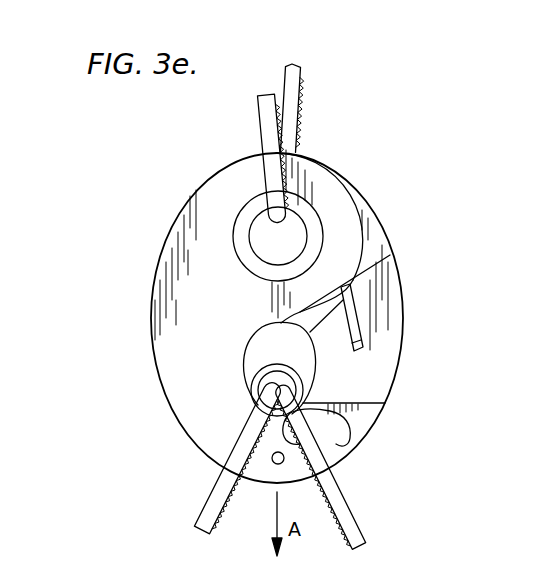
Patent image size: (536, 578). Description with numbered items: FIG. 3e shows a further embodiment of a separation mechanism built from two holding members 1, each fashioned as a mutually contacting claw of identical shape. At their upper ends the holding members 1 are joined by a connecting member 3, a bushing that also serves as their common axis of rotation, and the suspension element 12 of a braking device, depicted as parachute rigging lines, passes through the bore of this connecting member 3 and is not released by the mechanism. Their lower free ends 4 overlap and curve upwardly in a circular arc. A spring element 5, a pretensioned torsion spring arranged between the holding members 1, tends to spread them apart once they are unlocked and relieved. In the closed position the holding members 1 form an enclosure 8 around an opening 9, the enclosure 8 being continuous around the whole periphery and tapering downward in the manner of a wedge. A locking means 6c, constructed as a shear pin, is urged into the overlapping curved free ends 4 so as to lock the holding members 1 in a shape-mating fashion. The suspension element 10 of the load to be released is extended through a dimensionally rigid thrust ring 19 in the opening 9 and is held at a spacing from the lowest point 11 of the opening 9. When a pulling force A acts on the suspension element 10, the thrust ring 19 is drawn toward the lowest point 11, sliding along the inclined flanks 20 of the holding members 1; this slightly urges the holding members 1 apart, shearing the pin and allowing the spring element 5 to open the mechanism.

The holding member 1 is at (210, 187).
The connecting member 3 is at (297, 206).
The free end 4 is at (340, 438).
The spring element 5 is at (355, 300).
The locking means 6c is at (274, 465).
The enclosure 8 is at (242, 362).
The opening 9 is at (257, 335).
The suspension element 10 is at (356, 524).
The lowest point 11 is at (284, 430).
The suspension element of a braking device 12 is at (300, 82).
The thrust ring 19 is at (299, 367).
The inclined flank 20 is at (258, 403).